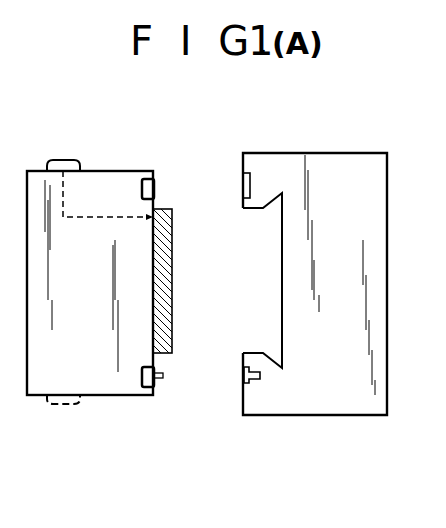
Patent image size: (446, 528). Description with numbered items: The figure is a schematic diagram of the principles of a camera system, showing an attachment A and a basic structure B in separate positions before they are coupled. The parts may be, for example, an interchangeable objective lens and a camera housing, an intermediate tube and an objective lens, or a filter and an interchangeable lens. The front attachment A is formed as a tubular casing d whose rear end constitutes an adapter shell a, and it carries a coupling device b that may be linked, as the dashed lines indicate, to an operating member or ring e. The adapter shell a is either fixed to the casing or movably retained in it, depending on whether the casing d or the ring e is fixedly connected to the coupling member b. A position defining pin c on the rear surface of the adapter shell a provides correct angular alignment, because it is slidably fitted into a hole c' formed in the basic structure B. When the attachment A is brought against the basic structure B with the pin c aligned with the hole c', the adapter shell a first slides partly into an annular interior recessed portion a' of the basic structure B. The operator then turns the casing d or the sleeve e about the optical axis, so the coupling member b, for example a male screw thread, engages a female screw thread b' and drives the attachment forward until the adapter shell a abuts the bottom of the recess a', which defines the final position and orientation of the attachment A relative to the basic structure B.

The attachment A is at (116, 289).
The basic structure B is at (297, 310).
The adapter shell a is at (166, 302).
The coupling device b is at (175, 282).
The position defining pin c is at (176, 376).
The tubular casing d is at (112, 180).
The operating ring e is at (63, 160).
The annular interior recessed portion a' is at (229, 289).
The female screw thread b' is at (262, 280).
The hole c' is at (264, 388).